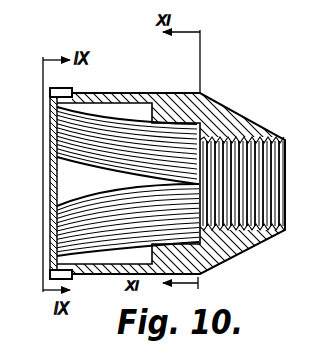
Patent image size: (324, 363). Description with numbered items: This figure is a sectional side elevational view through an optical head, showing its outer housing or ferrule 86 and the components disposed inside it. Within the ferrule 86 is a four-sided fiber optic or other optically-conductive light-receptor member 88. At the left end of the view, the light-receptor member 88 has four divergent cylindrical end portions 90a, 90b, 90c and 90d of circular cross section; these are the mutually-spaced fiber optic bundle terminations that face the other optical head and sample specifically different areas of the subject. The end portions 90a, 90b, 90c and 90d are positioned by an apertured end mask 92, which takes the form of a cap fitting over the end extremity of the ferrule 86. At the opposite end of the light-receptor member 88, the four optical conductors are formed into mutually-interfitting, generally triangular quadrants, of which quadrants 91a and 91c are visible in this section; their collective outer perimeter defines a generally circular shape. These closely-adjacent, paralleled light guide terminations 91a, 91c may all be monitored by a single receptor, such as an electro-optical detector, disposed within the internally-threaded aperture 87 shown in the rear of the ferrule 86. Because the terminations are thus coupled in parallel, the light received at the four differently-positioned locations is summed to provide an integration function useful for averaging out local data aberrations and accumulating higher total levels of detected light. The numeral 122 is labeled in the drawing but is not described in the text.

The sleeve body 122 is at (238, 109).
The outer housing or ferrule 86 is at (138, 93).
The internally-threaded aperture 87 is at (288, 140).
The light-receptor member 88 is at (99, 190).
The divergent cylindrical end portion 90a is at (60, 131).
The divergent cylindrical end portion 90d is at (56, 188).
The divergent cylindrical end portion 90b is at (55, 234).
The divergent cylindrical end portion 90c is at (55, 258).
The generally triangular quadrant 91a is at (198, 160).
The generally triangular quadrant 91c is at (198, 207).
The apertured end mask 92 is at (48, 273).